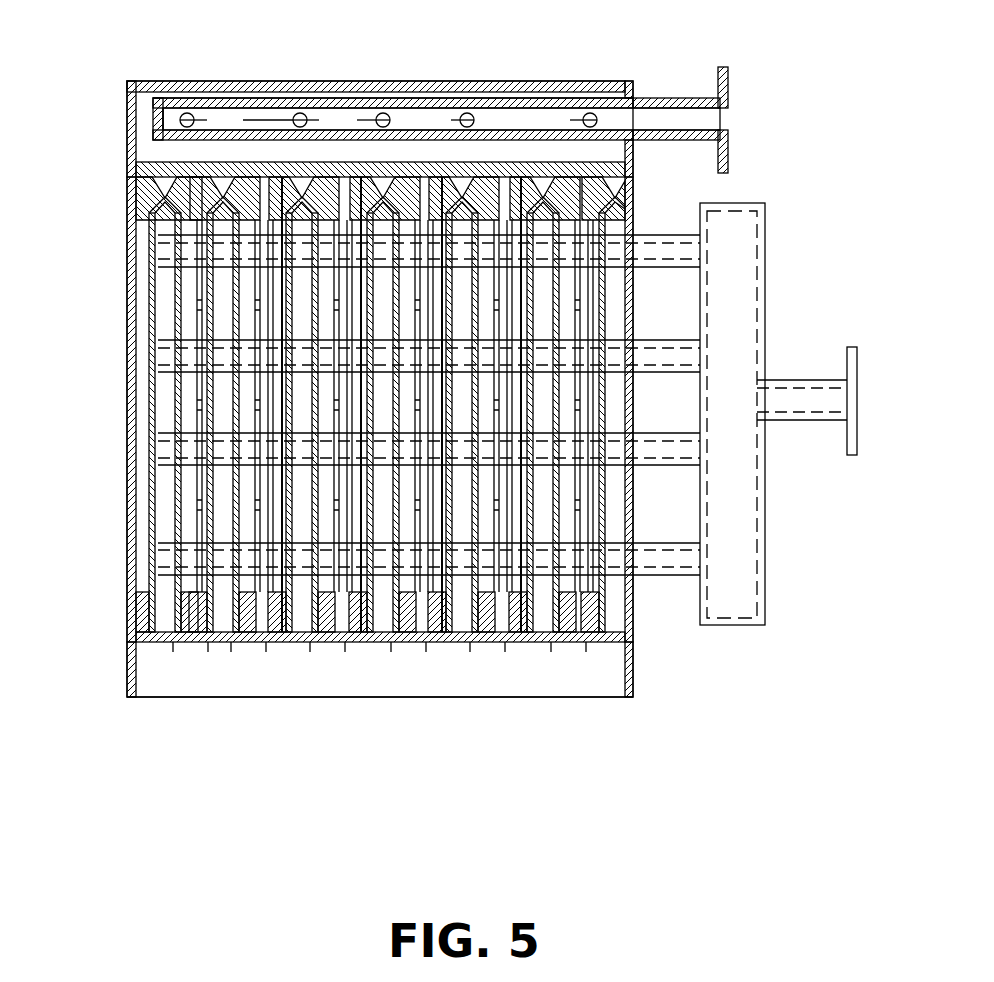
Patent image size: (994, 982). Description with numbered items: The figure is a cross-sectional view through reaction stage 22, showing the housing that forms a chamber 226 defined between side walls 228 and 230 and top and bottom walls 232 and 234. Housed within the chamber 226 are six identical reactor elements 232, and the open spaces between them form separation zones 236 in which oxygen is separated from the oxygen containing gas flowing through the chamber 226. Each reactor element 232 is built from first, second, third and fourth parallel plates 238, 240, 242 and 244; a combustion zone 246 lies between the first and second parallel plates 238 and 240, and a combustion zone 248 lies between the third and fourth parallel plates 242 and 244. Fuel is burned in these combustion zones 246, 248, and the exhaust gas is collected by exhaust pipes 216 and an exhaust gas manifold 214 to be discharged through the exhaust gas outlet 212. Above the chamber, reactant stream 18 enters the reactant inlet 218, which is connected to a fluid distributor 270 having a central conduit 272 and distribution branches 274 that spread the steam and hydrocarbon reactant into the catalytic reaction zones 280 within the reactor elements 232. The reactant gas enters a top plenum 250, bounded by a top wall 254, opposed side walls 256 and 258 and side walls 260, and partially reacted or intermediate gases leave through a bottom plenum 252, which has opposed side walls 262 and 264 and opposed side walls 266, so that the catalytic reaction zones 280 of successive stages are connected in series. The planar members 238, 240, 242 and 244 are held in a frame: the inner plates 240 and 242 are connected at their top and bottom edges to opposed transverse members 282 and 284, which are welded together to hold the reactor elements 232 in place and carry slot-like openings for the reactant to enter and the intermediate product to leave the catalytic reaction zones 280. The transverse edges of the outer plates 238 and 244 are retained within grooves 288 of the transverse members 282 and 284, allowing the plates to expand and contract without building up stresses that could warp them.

The reactant stream 18 is at (774, 120).
The reaction stage 22 is at (126, 368).
The exhaust gas outlet 212 is at (812, 400).
The exhaust gas manifold 214 is at (742, 272).
The exhaust pipes 216 is at (669, 258).
The reactant inlet 218 is at (675, 98).
The chamber 226 is at (138, 574).
The side wall 228 is at (130, 462).
The side wall 230 is at (633, 622).
The reactor element 232 is at (148, 178).
The bottom wall 234 is at (194, 646).
The separation zones 236 is at (158, 305).
The first parallel plate 238 is at (148, 351).
The second parallel plate 240 is at (165, 423).
The third parallel plate 242 is at (170, 544).
The fourth parallel plate 244 is at (205, 582).
The combustion zone 246 is at (165, 386).
The combustion zone 248 is at (170, 484).
The top plenum 250 is at (128, 98).
The bottom plenum 252 is at (272, 688).
The top wall 254 is at (208, 82).
The side wall 256 is at (153, 118).
The side wall 258 is at (636, 150).
The side walls 260 is at (302, 97).
The side wall 262 is at (130, 690).
The side wall 264 is at (636, 690).
The side walls 266 is at (418, 690).
The fluid distributor 270 is at (357, 100).
The central conduit 272 is at (257, 103).
The distribution branches 274 is at (388, 120).
The catalytic reaction zones 280 is at (172, 582).
The transverse member 282 is at (140, 182).
The transverse member 284 is at (162, 646).
The grooves 288 is at (203, 200).